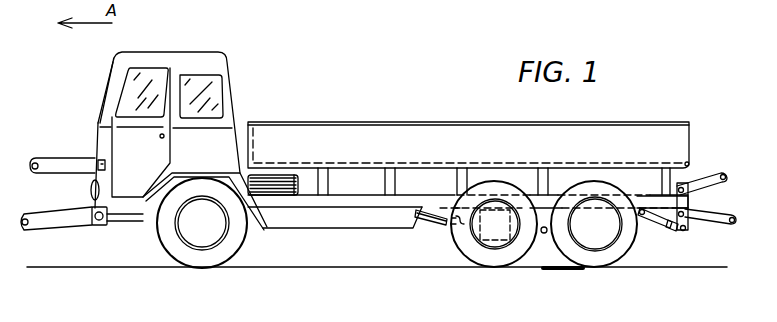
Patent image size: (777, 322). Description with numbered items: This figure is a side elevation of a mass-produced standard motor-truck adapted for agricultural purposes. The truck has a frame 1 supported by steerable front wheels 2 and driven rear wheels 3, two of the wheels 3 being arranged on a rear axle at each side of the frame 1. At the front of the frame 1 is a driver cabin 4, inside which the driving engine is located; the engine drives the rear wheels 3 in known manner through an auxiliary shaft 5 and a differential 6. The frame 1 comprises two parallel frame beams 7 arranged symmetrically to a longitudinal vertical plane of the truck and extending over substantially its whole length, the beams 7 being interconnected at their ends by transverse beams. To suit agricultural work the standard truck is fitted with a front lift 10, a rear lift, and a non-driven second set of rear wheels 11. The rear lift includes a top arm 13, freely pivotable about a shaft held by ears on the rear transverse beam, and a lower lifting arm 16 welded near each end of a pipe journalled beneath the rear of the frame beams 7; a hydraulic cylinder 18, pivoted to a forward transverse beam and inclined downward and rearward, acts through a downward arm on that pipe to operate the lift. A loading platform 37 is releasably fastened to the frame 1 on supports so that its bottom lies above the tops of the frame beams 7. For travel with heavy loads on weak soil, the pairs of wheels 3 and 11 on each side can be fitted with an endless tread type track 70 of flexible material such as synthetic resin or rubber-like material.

The frame 1 is at (357, 207).
The steerable front wheels 2 is at (235, 252).
The driven rear wheels 3 is at (516, 258).
The driver cabin 4 is at (97, 135).
The auxiliary shaft 5 is at (428, 222).
The differential 6 is at (493, 253).
The frame beams 7 is at (390, 205).
The front lift 10 is at (66, 227).
The second set of rear wheels 11 is at (610, 260).
The top arm 13 is at (700, 181).
The lower lifting arm 16 is at (705, 218).
The hydraulic cylinder 18 is at (660, 222).
The loading platform 37 is at (412, 122).
The endless tread type track 70 is at (284, 169).